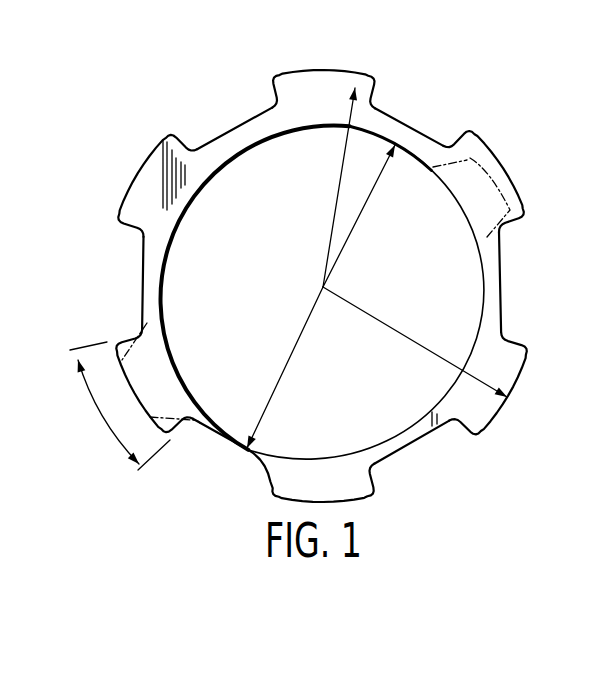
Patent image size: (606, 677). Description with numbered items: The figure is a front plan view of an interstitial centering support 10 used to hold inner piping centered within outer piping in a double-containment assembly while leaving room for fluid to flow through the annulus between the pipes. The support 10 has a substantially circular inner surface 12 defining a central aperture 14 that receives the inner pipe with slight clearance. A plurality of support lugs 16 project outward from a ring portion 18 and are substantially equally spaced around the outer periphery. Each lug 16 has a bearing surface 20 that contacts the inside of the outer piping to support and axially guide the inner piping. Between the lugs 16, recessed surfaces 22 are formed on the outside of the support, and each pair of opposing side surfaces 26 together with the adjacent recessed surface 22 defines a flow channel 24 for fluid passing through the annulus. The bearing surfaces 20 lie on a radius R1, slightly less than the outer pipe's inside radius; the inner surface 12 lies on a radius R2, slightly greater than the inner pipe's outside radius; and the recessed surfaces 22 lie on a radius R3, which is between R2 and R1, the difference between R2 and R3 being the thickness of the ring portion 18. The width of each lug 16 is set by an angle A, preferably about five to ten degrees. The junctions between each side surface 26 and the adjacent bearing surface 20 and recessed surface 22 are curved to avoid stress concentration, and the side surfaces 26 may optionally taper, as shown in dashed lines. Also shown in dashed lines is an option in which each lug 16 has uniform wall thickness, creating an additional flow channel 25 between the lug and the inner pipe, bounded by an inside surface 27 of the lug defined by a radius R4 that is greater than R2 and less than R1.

The interstitial centering support 10 is at (485, 95).
The inner surface 12 is at (413, 424).
The central aperture 14 is at (315, 418).
The support lug 16 is at (300, 80).
The ring portion 18 is at (237, 143).
The bearing surface 20 is at (333, 70).
The recessed surface 22 is at (247, 122).
The flow channel 24 is at (217, 123).
The additional flow channel 25 is at (463, 190).
The side surface 26 is at (517, 334).
The inside surface of lug 27 is at (513, 200).
The radius of bearing surfaces R1 is at (432, 342).
The radius of inner surface R2 is at (370, 190).
The radius of recessed surfaces R3 is at (283, 368).
The radius of lug inside surface R4 is at (339, 190).
The angle defining lug width A is at (103, 420).